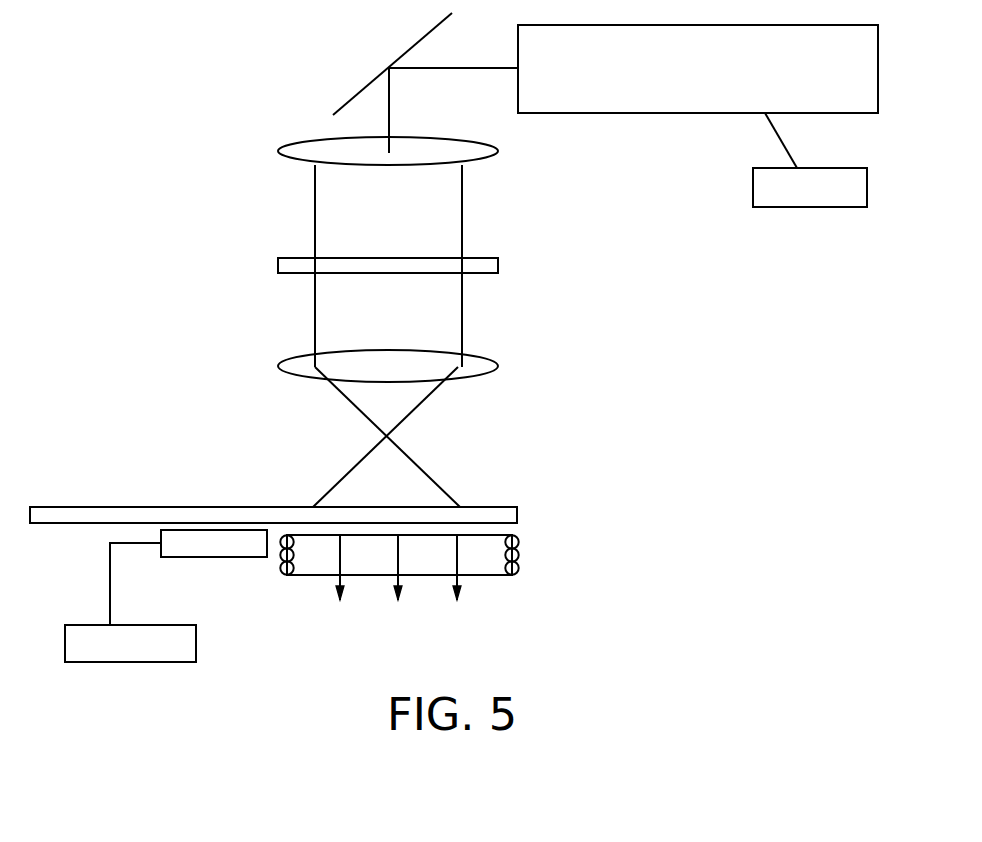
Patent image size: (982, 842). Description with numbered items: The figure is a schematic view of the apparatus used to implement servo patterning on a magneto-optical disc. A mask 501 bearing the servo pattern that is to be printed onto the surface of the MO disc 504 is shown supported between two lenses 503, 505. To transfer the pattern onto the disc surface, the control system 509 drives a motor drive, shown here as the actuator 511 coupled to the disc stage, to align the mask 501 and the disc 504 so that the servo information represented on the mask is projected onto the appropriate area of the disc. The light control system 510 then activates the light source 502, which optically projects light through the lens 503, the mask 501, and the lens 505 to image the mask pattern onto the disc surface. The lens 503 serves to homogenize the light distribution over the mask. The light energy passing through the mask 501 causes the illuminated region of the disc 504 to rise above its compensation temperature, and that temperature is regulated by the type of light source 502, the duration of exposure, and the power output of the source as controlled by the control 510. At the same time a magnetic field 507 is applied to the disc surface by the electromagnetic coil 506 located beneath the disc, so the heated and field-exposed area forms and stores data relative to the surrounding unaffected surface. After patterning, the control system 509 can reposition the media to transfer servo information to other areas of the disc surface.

The mask 501 is at (499, 266).
The light source 502 is at (653, 113).
The lens 503 is at (278, 152).
The MO disc 504 is at (518, 512).
The lens 505 is at (497, 367).
The electromagnetic coil 506 is at (515, 565).
The magnetic field 507 is at (428, 590).
The control system 509 is at (77, 653).
The light control system 510 is at (762, 200).
The stage actuator 511 is at (182, 550).